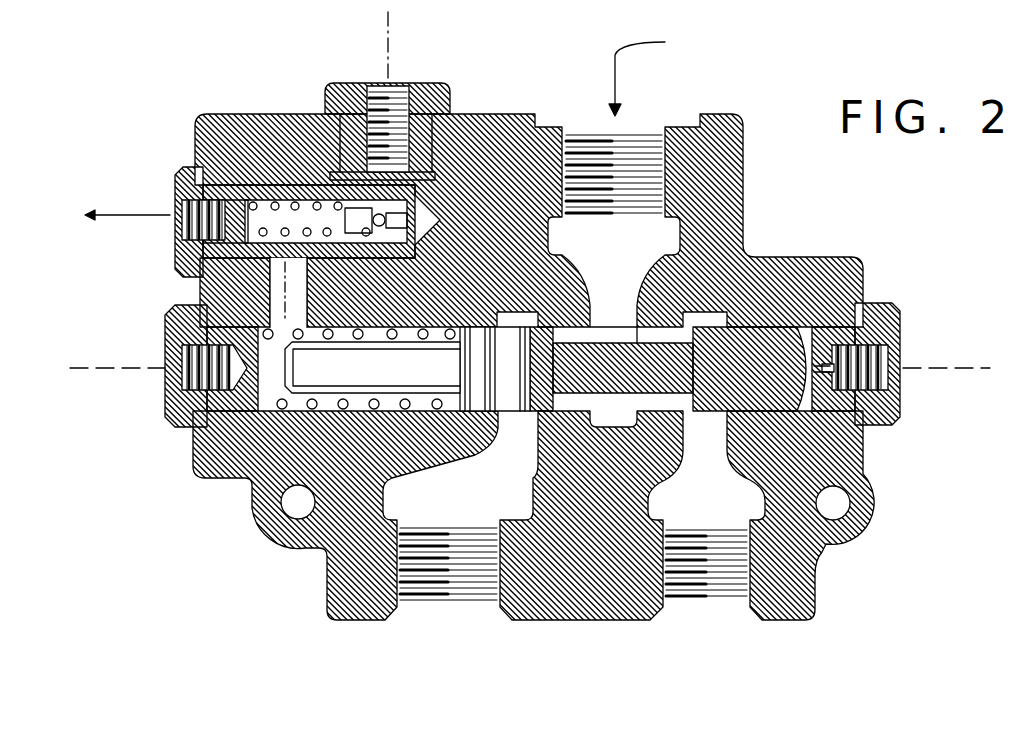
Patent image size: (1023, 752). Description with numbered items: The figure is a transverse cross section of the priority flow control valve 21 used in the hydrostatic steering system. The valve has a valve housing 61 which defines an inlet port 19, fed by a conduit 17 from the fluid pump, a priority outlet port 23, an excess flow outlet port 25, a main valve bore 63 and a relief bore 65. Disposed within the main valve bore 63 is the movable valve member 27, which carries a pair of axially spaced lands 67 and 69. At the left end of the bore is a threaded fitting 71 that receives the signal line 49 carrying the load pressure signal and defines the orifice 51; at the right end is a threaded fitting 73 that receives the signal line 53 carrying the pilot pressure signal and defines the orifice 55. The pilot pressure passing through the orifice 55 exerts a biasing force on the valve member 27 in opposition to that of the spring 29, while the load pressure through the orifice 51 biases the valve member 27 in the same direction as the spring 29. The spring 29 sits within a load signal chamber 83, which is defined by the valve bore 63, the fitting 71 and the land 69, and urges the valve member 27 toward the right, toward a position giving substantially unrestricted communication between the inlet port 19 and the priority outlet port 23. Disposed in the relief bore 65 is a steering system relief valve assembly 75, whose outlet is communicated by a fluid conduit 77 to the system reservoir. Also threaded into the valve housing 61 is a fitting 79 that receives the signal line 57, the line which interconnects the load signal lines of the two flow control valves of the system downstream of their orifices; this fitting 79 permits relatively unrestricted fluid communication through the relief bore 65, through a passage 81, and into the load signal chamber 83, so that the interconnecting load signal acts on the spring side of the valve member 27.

The conduit 17 is at (655, 71).
The inlet port 19 is at (645, 160).
The priority flow control valve 21 is at (203, 108).
The priority outlet port 23 is at (735, 577).
The excess flow outlet port 25 is at (481, 577).
The valve member 27 is at (654, 338).
The spring 29 is at (490, 415).
The signal line 49 is at (138, 366).
The orifice 51 is at (530, 366).
The signal line 53 is at (930, 366).
The orifice 55 is at (812, 369).
The signal line 57 is at (392, 52).
The valve housing 61 is at (260, 186).
The main valve bore 63 is at (323, 413).
The relief bore 65 is at (388, 252).
The land 67 is at (760, 340).
The land 69 is at (515, 350).
The threaded fitting 71 is at (168, 415).
The threaded fitting 73 is at (882, 418).
The steering system relief valve assembly 75 is at (305, 180).
The fluid conduit 77 is at (135, 212).
The fitting 79 is at (442, 108).
The passage 81 is at (300, 290).
The load signal chamber 83 is at (268, 402).